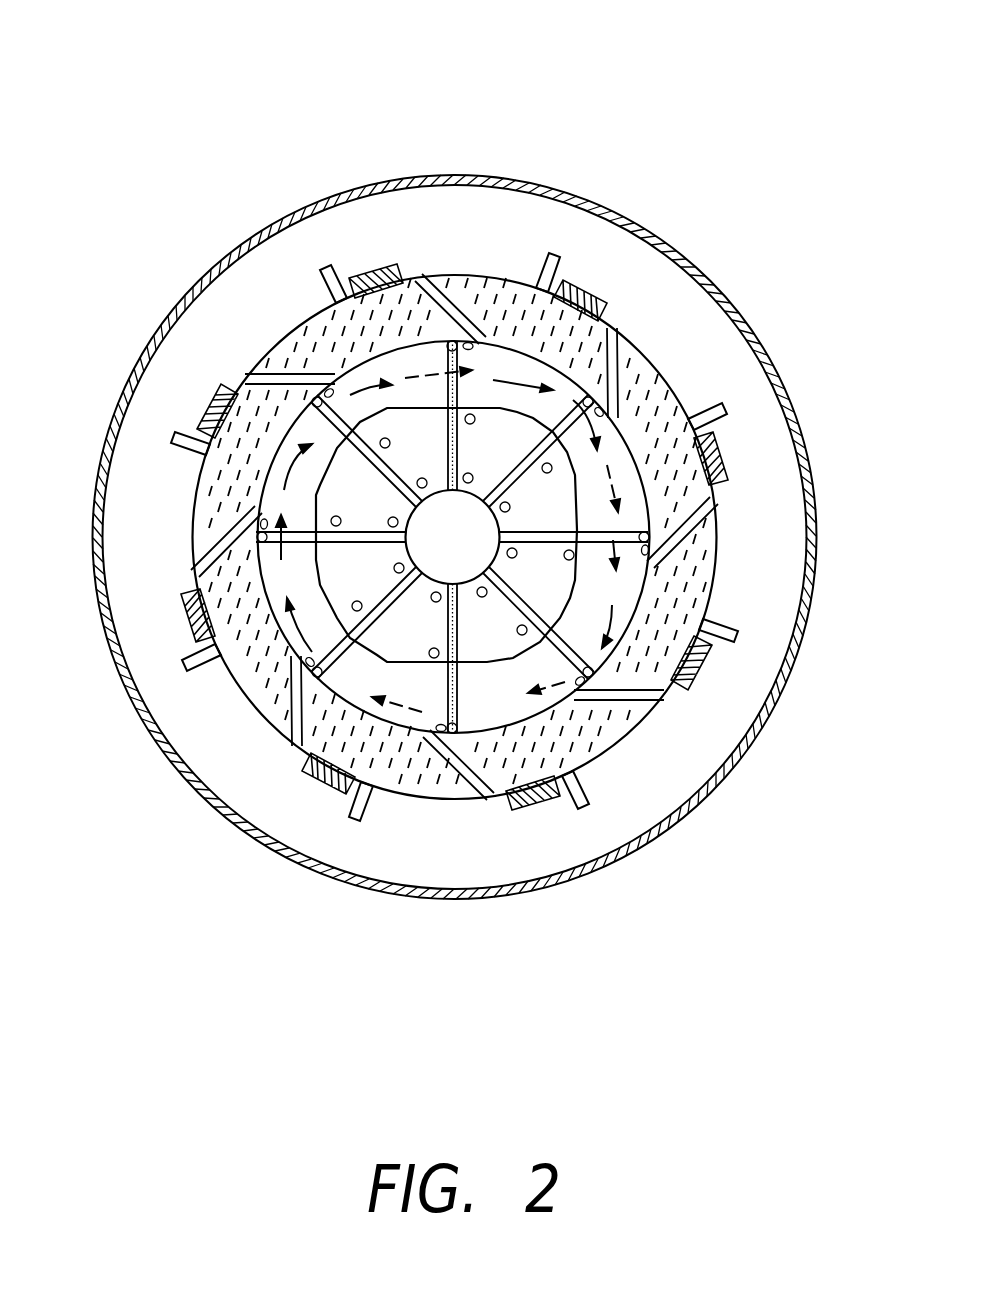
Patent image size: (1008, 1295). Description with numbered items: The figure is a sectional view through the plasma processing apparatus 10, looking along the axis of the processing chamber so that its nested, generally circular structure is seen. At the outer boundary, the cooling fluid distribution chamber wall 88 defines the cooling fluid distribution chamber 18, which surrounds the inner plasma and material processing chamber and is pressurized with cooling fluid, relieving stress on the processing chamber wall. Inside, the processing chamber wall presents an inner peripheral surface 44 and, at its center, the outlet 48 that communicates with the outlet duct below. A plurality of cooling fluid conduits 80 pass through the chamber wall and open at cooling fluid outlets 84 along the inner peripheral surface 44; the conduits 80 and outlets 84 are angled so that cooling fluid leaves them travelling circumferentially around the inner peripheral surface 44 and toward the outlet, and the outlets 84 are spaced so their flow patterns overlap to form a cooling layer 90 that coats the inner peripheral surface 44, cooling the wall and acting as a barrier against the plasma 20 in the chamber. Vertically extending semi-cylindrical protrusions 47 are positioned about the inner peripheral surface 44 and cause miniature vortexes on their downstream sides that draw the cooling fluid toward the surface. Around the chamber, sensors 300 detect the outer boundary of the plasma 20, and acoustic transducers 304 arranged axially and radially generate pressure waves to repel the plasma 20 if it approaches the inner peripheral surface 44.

The plasma processing apparatus 10 is at (130, 166).
The cooling fluid distribution chamber 18 is at (717, 240).
The cooling fluid distribution chamber wall 88 is at (727, 288).
The plasma 20 is at (320, 497).
The acoustic transducer 304 is at (217, 392).
The sensor 300 is at (190, 438).
The cooling layer 90 is at (643, 462).
The semi-cylindrical protrusion 47 is at (560, 398).
The cooling fluid conduit 80 is at (690, 533).
The cooling fluid outlet 84 is at (652, 551).
The inner peripheral surface 44 is at (578, 397).
The outlet 48 is at (469, 553).